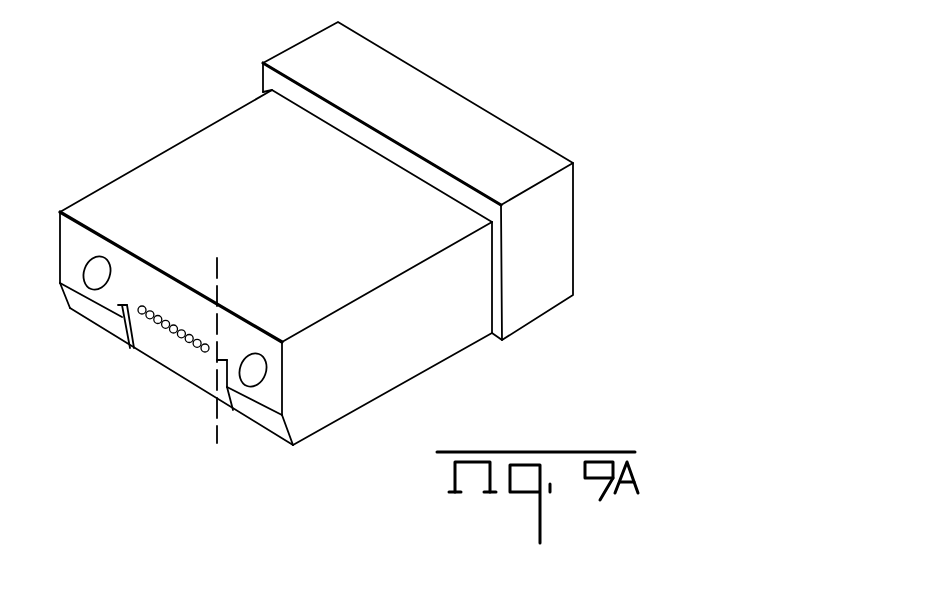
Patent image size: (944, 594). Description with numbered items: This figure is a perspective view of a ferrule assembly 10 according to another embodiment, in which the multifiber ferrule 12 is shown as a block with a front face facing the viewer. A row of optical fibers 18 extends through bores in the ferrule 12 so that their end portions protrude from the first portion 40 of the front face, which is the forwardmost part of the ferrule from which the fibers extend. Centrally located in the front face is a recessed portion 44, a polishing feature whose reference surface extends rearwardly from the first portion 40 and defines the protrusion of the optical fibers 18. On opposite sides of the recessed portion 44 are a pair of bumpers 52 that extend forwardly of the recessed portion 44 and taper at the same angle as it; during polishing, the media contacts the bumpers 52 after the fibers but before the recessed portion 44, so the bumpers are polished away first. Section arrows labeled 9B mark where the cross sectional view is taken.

The ferrule assembly 10 is at (497, 68).
The multifiber ferrule 12 is at (430, 317).
The optical fibers 18 is at (138, 302).
The first portion 40 is at (272, 360).
The recessed portion 44 is at (145, 347).
The bumper 52 is at (72, 303).
The section line 9B is at (217, 260).